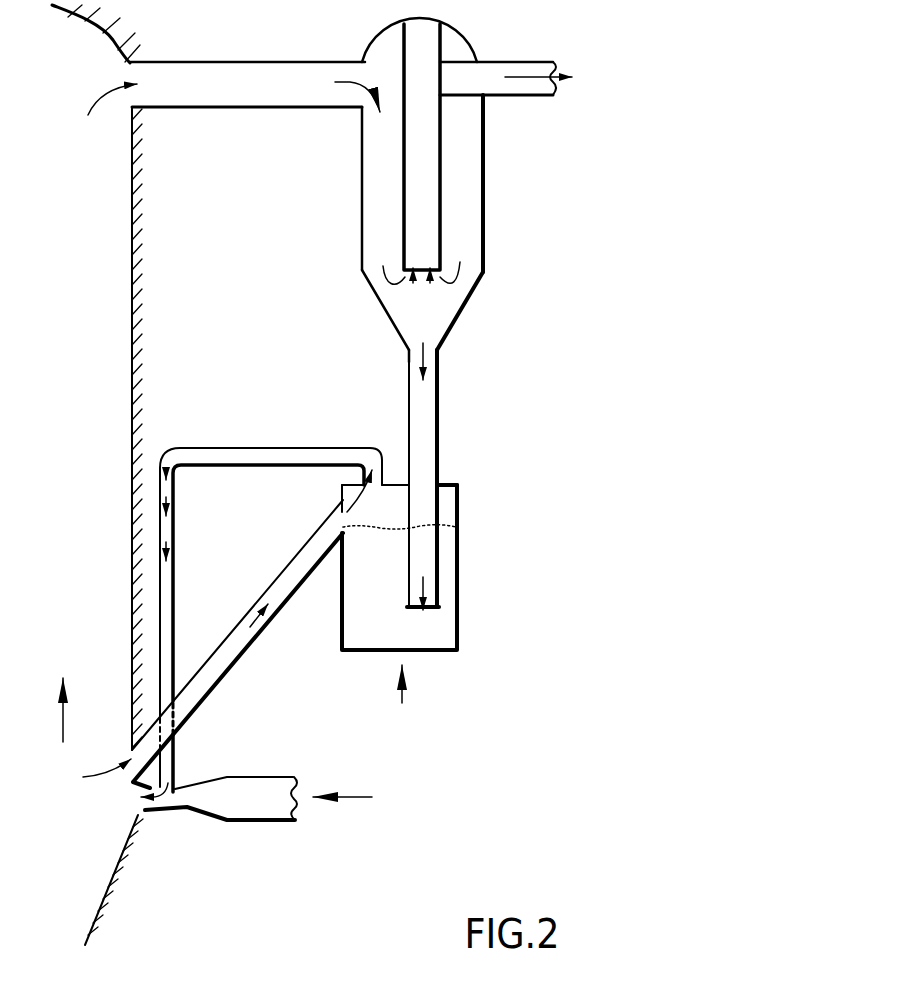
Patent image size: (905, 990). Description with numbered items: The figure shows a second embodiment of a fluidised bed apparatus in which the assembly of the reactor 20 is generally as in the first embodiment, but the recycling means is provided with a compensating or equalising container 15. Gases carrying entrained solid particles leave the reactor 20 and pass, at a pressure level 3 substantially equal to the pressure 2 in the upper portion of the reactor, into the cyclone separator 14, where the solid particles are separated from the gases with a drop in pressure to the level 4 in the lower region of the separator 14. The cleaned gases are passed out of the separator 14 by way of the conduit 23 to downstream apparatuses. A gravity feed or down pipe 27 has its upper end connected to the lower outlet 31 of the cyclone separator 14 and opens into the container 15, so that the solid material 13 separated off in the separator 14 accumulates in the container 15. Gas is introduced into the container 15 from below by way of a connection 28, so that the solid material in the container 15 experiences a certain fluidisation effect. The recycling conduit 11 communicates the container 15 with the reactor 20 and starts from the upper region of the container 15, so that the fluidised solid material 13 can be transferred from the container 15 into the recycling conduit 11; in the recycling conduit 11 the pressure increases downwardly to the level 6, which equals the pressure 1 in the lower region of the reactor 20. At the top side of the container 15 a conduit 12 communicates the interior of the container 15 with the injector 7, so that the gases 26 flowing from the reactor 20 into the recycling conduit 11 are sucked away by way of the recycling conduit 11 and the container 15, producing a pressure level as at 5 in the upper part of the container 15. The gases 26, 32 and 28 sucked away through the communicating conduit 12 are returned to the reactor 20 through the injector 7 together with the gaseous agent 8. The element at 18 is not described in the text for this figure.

The pressure in lower region of reactor 1 is at (63, 698).
The pressure in upper portion of reactor 2 is at (87, 116).
The pressure at separator inlet 3 is at (352, 82).
The pressure in lower region of separator 4 is at (435, 332).
The pressure in upper part of container 5 is at (347, 513).
The pressure at lower end of recycling conduit 6 is at (105, 777).
The injector 7 is at (260, 823).
The gaseous agent 8 is at (350, 794).
The recycling conduit 11 is at (237, 662).
The conduit 12 is at (237, 448).
The solid material 13 is at (448, 587).
The cyclone separator 14 is at (483, 195).
The compensating or equalising container 15 is at (457, 557).
The vessel cover 18 is at (447, 483).
The fluidised bed reactor 20 is at (33, 393).
The conduit 23 is at (517, 77).
The gases 26 is at (170, 452).
The gravity feed or down pipe 27 is at (437, 420).
The gas connection 28 is at (402, 690).
The lower outlet of cyclone separator 31 is at (408, 350).
The gases 32 is at (422, 357).